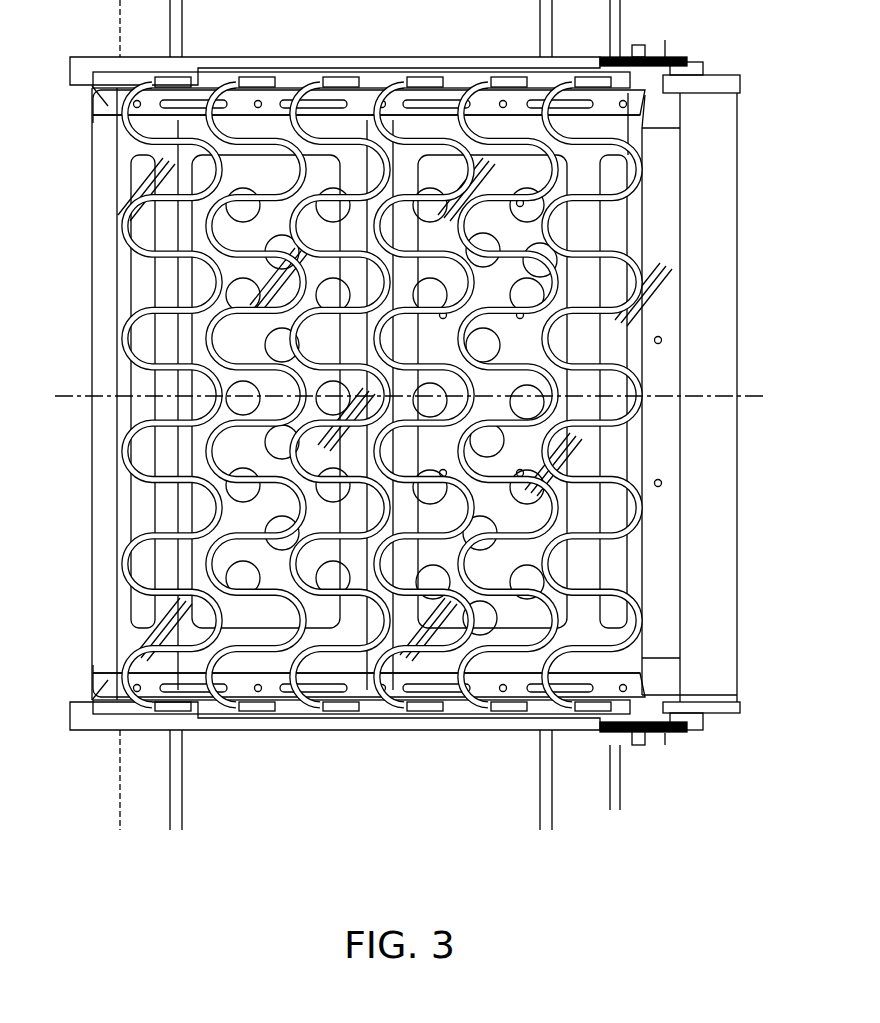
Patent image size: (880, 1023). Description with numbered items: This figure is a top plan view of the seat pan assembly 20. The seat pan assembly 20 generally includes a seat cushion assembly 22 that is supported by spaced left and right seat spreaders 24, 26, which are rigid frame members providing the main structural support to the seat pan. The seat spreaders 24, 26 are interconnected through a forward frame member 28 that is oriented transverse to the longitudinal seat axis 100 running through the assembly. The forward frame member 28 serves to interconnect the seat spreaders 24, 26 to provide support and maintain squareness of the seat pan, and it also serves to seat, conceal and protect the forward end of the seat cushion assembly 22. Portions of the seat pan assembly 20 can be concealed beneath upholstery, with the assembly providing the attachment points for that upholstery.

The seat pan assembly 20 is at (770, 160).
The seat cushion assembly 22 is at (92, 247).
The seat spreader 24 is at (97, 697).
The seat spreader 26 is at (97, 92).
The forward frame member 28 is at (125, 530).
The longitudinal seat axis 100 is at (77, 398).